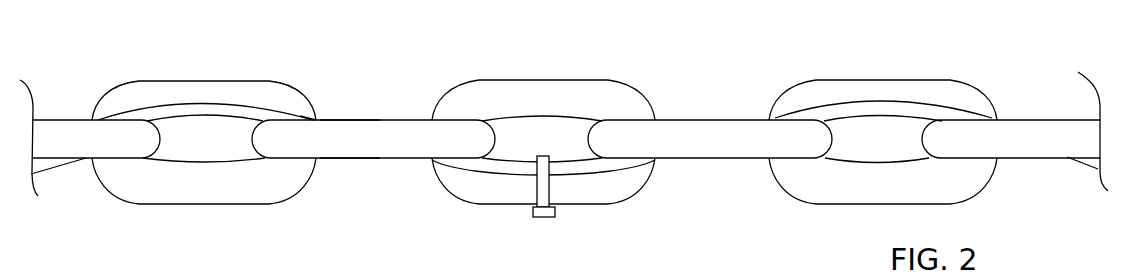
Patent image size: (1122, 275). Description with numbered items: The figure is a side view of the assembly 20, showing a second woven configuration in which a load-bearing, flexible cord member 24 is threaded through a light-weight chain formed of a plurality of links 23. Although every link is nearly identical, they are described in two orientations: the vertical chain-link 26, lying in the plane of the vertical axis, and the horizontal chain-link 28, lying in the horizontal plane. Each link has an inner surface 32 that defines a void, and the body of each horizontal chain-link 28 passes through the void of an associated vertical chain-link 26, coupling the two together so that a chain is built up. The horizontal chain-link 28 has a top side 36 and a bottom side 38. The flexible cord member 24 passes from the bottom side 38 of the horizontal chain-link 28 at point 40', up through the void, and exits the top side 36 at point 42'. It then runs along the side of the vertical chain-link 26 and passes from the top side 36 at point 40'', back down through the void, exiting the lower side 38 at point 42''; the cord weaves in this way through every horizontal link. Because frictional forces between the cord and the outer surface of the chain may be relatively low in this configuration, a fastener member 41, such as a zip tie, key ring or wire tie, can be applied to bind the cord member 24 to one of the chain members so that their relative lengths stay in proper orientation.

The assembly 20 is at (543, 70).
The links 23 is at (619, 197).
The flexible cord member 24 is at (173, 104).
The vertical chain-link 26 is at (277, 82).
The horizontal chain-link 28 is at (398, 118).
The inner surface 32 is at (200, 153).
The top side 36 is at (350, 118).
The bottom side 38 is at (340, 160).
The point 40' is at (90, 159).
The point 40'' is at (323, 93).
The fastener member 41 is at (540, 192).
The point 42' is at (165, 86).
The point 42'' is at (542, 197).